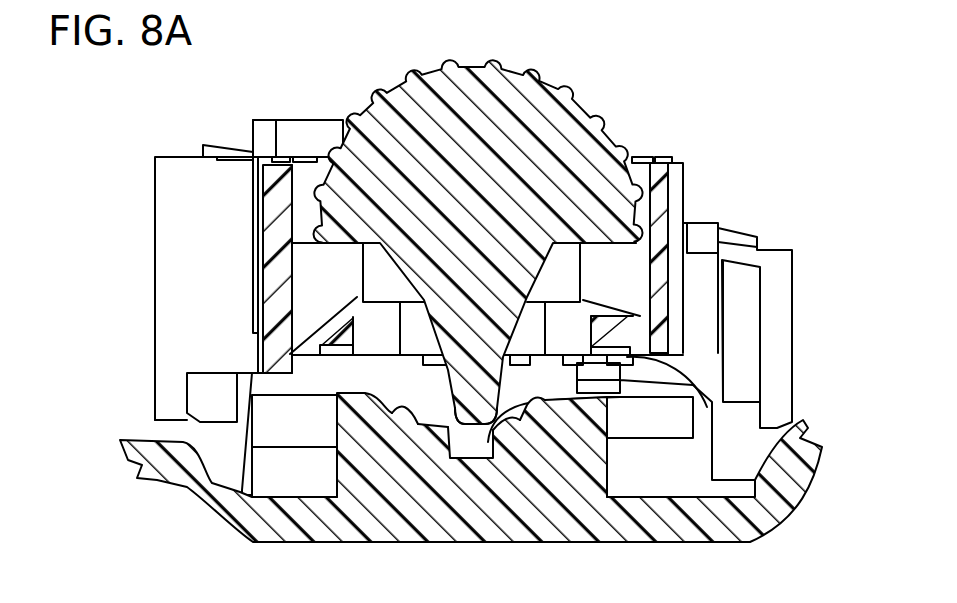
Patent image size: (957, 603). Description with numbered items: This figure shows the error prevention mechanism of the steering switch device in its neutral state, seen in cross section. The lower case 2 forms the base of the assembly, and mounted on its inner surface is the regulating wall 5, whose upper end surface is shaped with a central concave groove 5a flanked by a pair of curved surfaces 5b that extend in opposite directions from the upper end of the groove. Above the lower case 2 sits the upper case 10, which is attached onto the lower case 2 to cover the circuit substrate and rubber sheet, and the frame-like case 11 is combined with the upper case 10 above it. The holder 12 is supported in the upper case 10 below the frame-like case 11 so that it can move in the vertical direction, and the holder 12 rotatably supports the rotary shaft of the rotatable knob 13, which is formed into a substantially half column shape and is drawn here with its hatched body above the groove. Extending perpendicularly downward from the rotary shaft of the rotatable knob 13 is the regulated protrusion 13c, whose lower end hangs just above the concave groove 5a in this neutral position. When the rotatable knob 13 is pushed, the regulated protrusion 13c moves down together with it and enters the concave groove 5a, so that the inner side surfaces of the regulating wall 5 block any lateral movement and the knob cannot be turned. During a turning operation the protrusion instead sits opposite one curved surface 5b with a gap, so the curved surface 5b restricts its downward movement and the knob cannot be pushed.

The lower case 2 is at (793, 480).
The regulating wall 5 is at (378, 458).
The concave groove 5a is at (487, 440).
The curved surface 5b is at (410, 408).
The upper case 10 is at (777, 263).
The frame-like case 11 is at (303, 132).
The holder 12 is at (267, 165).
The rotatable knob 13 is at (533, 108).
The regulated protrusion 13c is at (470, 376).